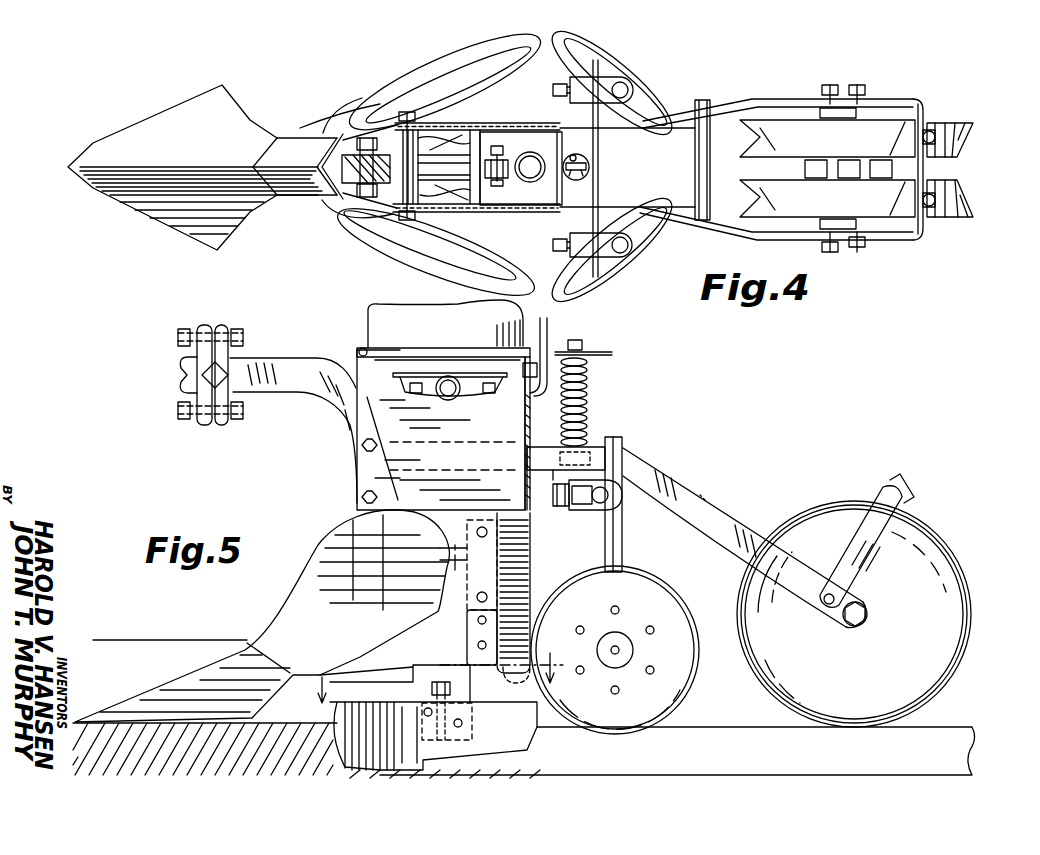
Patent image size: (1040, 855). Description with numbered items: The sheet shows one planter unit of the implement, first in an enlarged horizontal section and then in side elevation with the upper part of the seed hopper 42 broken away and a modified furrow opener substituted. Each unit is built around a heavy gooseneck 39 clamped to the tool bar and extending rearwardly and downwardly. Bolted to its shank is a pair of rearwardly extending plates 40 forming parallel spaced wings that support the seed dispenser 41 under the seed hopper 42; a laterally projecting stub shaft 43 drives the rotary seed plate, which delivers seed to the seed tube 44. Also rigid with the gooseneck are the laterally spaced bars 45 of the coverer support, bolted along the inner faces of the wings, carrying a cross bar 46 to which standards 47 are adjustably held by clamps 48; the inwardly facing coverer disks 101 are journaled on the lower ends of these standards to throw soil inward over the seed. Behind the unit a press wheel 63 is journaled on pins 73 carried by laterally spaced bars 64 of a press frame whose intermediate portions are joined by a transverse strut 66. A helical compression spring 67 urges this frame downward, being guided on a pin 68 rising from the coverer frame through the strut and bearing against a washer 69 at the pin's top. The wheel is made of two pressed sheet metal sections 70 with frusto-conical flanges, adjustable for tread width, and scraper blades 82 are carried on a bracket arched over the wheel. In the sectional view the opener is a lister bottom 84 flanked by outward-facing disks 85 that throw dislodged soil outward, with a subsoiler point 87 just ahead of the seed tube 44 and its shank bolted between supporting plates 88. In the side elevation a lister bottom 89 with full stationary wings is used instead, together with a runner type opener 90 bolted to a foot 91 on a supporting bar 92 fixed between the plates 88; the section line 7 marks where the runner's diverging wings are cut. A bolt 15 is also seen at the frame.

In FIG. 5, the section line 7- 7 is at (436, 687).
In FIG. 4, the bolt 15 is at (405, 110).
In FIG. 4, the gooseneck 39 is at (346, 112).
In FIG. 5, the gooseneck 39 is at (330, 418).
In FIG. 4, the plates 40 is at (518, 121).
In FIG. 5, the plates 40 is at (357, 485).
In FIG. 5, the seed dispenser 41 is at (440, 372).
In FIG. 5, the seed hopper 42 is at (377, 313).
In FIG. 5, the stub shaft 43 is at (452, 376).
In FIG. 4, the seed tube 44 is at (518, 180).
In FIG. 5, the seed tube 44 is at (528, 580).
In FIG. 5, the bars 45 is at (537, 510).
In FIG. 4, the cross bar 46 is at (590, 215).
In FIG. 5, the cross bar 46 is at (588, 510).
In FIG. 5, the standards 47 is at (623, 547).
In FIG. 4, the clamps 48 is at (578, 152).
In FIG. 5, the clamps 48 is at (625, 493).
In FIG. 4, the press wheel 63 is at (981, 169).
In FIG. 5, the press wheel 63 is at (845, 484).
In FIG. 4, the bars 64 is at (622, 131).
In FIG. 5, the bars 64 is at (708, 510).
In FIG. 4, the strut 66 is at (598, 193).
In FIG. 5, the strut 66 is at (585, 447).
In FIG. 5, the compression spring 67 is at (590, 376).
In FIG. 5, the pin 68 is at (584, 346).
In FIG. 5, the washer 69 is at (614, 353).
In FIG. 4, the sheet metal sections 70 is at (757, 197).
In FIG. 4, the pins 73 is at (860, 250).
In FIG. 5, the pins 73 is at (868, 615).
In FIG. 4, the scraper blades 82 is at (930, 132).
In FIG. 5, the scraper blades 82 is at (905, 500).
In FIG. 4, the lister bottom 84 is at (165, 118).
In FIG. 4, the disks 85 is at (460, 53).
In FIG. 4, the subsoiler point 87 is at (529, 156).
In FIG. 4, the supporting plates 88 is at (462, 165).
In FIG. 5, the supporting plates 88 is at (467, 605).
In FIG. 5, the lister bottom 89 is at (275, 618).
In FIG. 5, the runner type opener 90 is at (343, 700).
In FIG. 5, the foot 91 is at (450, 665).
In FIG. 5, the supporting bar 92 is at (468, 637).
In FIG. 4, the coverer disks 101 is at (655, 72).
In FIG. 5, the coverer disks 101 is at (668, 590).